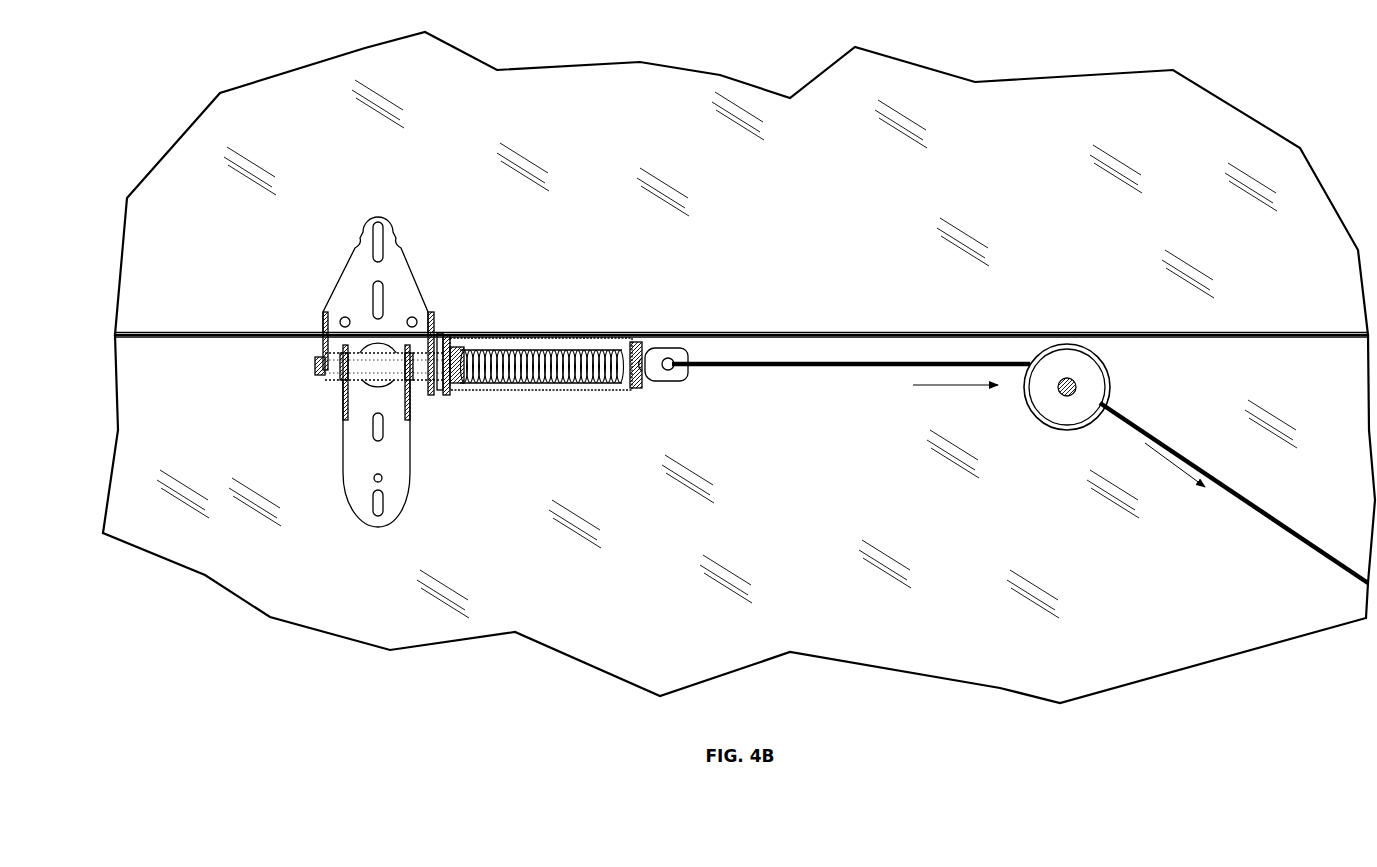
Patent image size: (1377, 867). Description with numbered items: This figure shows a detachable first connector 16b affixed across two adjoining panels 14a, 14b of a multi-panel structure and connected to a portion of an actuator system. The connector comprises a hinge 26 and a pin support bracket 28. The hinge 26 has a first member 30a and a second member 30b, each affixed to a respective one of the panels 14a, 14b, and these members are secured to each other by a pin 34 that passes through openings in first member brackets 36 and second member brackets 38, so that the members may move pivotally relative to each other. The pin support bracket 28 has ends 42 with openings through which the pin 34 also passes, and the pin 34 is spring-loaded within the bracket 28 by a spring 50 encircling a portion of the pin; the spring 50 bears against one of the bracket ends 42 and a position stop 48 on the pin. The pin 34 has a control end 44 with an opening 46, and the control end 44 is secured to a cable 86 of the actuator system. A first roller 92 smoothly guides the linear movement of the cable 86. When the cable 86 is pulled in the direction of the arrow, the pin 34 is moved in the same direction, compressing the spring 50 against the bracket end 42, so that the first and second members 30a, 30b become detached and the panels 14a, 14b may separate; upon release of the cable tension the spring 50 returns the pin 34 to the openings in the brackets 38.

The first panel 14a is at (160, 247).
The second panel 14b is at (160, 441).
The first connector 16b is at (431, 211).
The hinge 26 is at (388, 368).
The first member 30a is at (350, 272).
The second member 30b is at (402, 462).
The first member brackets 36 is at (322, 318).
The second member brackets 38 is at (343, 405).
The pin 34 is at (448, 395).
The position stop 48 is at (450, 340).
The pin support bracket 28 is at (546, 372).
The spring 50 is at (488, 390).
The bracket ends 42 is at (625, 390).
The control end 44 is at (702, 357).
The opening 46 is at (688, 385).
The cable 86 is at (850, 366).
The first roller 92 is at (1055, 412).